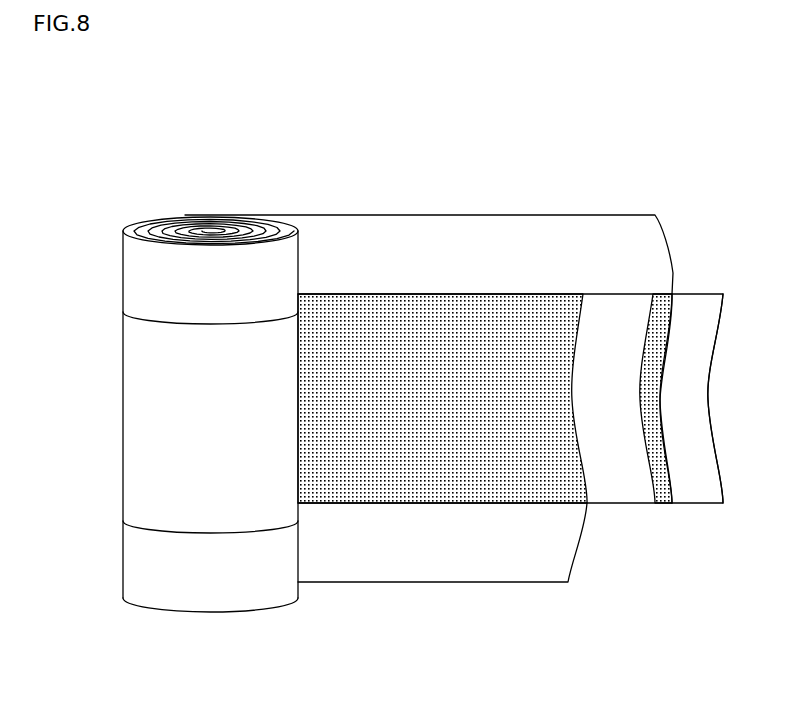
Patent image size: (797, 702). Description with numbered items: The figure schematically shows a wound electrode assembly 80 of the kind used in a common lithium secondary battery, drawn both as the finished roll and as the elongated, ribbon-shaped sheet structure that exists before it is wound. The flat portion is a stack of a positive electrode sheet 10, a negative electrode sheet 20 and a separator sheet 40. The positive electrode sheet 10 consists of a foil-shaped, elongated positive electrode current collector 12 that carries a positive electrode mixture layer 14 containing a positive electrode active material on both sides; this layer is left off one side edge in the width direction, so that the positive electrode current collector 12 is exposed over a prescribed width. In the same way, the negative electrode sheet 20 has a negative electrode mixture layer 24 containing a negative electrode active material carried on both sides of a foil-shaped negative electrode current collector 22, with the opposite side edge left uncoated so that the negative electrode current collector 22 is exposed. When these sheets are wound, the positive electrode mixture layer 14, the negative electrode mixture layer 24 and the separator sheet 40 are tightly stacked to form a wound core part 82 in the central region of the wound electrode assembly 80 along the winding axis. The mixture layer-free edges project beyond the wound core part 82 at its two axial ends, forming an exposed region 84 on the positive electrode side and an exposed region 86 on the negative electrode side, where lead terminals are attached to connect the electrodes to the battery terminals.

The positive electrode sheet 10 is at (458, 314).
The positive electrode current collector 12 is at (518, 230).
The positive electrode mixture layer 14 is at (660, 307).
The negative electrode sheet 20 is at (520, 483).
The negative electrode current collector 22 is at (478, 567).
The negative electrode mixture layer 24 is at (535, 490).
The separator sheet 40 is at (617, 493).
The wound electrode assembly 80 is at (170, 371).
The wound core part 82 is at (143, 412).
The exposed region on the positive electrode side 84 is at (145, 288).
The exposed region on the negative electrode side 86 is at (143, 565).